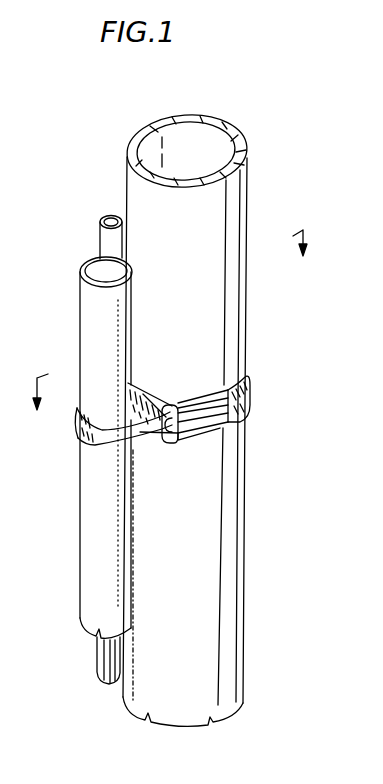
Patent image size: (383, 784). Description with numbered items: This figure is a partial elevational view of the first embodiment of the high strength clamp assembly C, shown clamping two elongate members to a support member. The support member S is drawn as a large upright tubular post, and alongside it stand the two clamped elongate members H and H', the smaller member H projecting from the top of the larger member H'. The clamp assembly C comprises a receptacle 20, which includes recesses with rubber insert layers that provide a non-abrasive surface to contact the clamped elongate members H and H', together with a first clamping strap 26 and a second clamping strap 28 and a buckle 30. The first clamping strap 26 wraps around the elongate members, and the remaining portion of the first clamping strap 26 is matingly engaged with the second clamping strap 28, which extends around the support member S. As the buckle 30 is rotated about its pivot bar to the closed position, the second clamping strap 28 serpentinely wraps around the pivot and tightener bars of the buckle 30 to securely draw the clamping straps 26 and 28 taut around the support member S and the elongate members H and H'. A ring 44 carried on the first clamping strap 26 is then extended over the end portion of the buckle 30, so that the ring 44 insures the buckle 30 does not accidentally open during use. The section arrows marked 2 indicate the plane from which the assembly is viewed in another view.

The support member S is at (240, 193).
The elongate member H is at (89, 236).
The elongate member H' is at (85, 470).
The high strength clamp assembly C is at (259, 370).
The receptacle 20 is at (142, 394).
The first clamping strap 26 is at (103, 443).
The second clamping strap 28 is at (248, 390).
The buckle 30 is at (195, 432).
The ring 44 is at (167, 405).
The section line 2- 2 is at (167, 334).